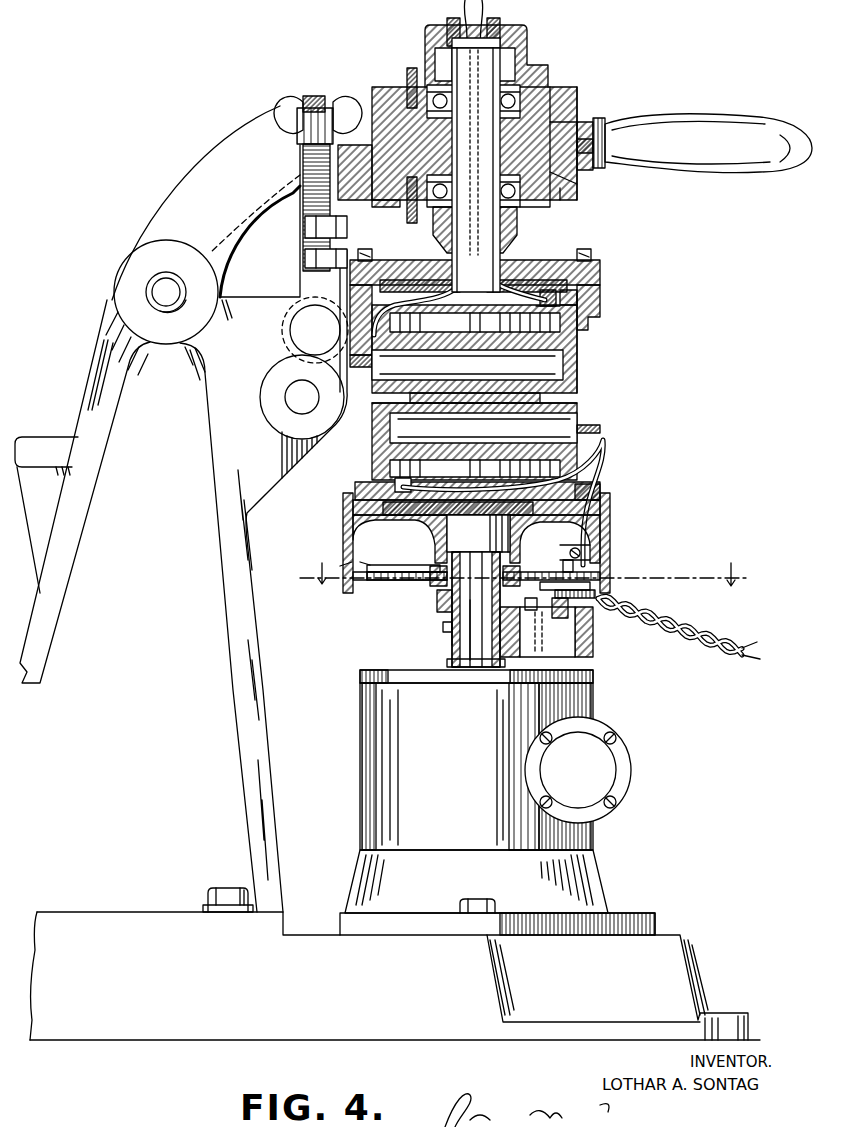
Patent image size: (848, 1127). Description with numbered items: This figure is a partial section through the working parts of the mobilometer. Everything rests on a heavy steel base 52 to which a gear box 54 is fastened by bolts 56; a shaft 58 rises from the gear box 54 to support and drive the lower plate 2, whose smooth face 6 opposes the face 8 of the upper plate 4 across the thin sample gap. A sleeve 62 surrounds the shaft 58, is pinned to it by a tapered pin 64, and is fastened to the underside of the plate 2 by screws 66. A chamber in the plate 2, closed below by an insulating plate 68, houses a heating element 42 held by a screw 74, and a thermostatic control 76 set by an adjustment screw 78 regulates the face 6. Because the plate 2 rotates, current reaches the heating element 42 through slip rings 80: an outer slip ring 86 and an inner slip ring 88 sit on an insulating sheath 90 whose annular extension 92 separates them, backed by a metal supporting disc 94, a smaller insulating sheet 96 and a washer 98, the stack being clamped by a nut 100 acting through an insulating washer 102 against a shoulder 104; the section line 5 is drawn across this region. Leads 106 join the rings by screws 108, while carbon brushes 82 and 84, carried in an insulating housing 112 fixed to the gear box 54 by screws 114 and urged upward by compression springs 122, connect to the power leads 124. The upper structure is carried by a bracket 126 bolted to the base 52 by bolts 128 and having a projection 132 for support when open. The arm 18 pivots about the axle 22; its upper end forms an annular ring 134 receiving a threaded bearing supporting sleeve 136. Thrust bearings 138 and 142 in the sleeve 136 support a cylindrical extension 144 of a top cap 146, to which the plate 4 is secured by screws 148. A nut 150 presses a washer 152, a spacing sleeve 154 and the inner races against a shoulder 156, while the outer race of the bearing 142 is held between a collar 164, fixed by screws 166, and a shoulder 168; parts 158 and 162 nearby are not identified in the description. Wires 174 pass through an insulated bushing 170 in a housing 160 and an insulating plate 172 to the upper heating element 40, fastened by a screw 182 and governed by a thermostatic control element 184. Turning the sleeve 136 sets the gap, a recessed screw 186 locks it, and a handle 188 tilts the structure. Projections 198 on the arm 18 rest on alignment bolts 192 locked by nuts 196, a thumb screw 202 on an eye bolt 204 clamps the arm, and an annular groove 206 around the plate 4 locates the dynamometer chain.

The lower plate 2 is at (372, 443).
The upper plate 4 is at (580, 352).
The section line 5- 5 is at (525, 572).
The lower plate face 6 is at (378, 408).
The upper plate face 8 is at (447, 400).
The arm 18 is at (163, 195).
The hinge axle 22 is at (160, 290).
The upper heating element 40 is at (580, 337).
The lower heating element 42 is at (385, 471).
The base 52 is at (690, 965).
The gear box 54 is at (598, 835).
The bolts 56 is at (472, 898).
The shaft 58 is at (470, 648).
The sleeve 62 is at (444, 627).
The tapered pin 64 is at (458, 625).
The screws 66 is at (346, 527).
The insulating plate 68 is at (362, 496).
The screw 74 is at (592, 465).
The thermostatic control 76 is at (580, 416).
The adjustment screw 78 is at (602, 429).
The slip rings 80 is at (320, 560).
The carbon brush 82 is at (603, 584).
The carbon brush 84 is at (607, 597).
The outer slip ring 86 is at (392, 582).
The inner slip ring 88 is at (430, 582).
The insulating sheath 90 is at (374, 580).
The annular extension 92 is at (410, 582).
The metal supporting disc 94 is at (340, 560).
The insulating sheet 96 is at (366, 567).
The washer 98 is at (372, 566).
The nut 100 is at (448, 613).
The insulating washer 102 is at (486, 578).
The shoulder 104 is at (432, 560).
The electrical leads 106 is at (592, 492).
The screws 108 is at (612, 576).
The insulating housing 112 is at (596, 645).
The screws 114 is at (455, 658).
The compression spring 122 is at (580, 663).
The leads 124 is at (730, 652).
The bracket 126 is at (62, 610).
The bolts 128 is at (228, 888).
The projection 132 is at (44, 440).
The annular ring 134 is at (578, 95).
The bearing supporting sleeve 136 is at (560, 87).
The thrust bearing 138 is at (538, 87).
The thrust bearing 142 is at (578, 194).
The cylindrical extension 144 is at (514, 236).
The top cap 146 is at (600, 270).
The screws 148 is at (368, 257).
The nut 150 is at (502, 66).
The washer 152 is at (437, 76).
The spacing sleeve 154 is at (447, 137).
The shoulder 156 is at (512, 205).
The handle boss 158 is at (580, 107).
The housing 160 is at (523, 38).
The set screw 162 is at (402, 78).
The collar 164 is at (560, 218).
The screws 166 is at (402, 222).
The shoulder 168 is at (578, 178).
The insulated bushing 170 is at (448, 26).
The insulating plate 172 is at (600, 287).
The wires 174 is at (462, 20).
The screw 182 is at (565, 323).
The thermostatic control element 184 is at (562, 368).
The recessed set screw 186 is at (618, 123).
The handle 188 is at (742, 118).
The alignment bolt 192 is at (305, 228).
The nuts 196 is at (305, 258).
The projections 198 is at (268, 183).
The thumb screw 202 is at (284, 104).
The eye bolt 204 is at (316, 98).
The annular groove 206 is at (600, 294).